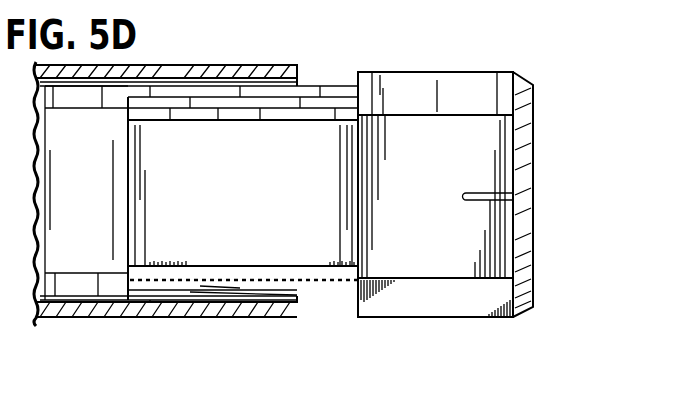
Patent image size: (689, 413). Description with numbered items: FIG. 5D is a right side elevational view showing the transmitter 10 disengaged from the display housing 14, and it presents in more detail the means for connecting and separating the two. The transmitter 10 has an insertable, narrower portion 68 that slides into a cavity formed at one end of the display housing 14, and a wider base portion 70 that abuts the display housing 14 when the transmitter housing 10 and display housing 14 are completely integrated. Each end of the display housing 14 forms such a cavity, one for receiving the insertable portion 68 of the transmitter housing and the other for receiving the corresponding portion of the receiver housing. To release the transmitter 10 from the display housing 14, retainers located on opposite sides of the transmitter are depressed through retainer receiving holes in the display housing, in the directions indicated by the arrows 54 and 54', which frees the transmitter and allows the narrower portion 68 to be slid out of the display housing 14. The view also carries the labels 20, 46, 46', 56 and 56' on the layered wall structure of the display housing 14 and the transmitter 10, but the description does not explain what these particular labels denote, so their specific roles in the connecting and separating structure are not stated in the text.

The transmitter 10 is at (535, 165).
The display housing 14 is at (72, 318).
The coupling body 20 is at (525, 245).
The thread/serrated surface 46 is at (243, 310).
The thread/serrated surface (upper) 46' is at (243, 81).
The arrow 54 is at (160, 251).
The arrow 54' is at (169, 69).
The liner layer 56 is at (168, 335).
The liner layer (upper) 56' is at (199, 52).
The insertable narrower portion 68 is at (282, 248).
The wider base portion 70 is at (467, 322).